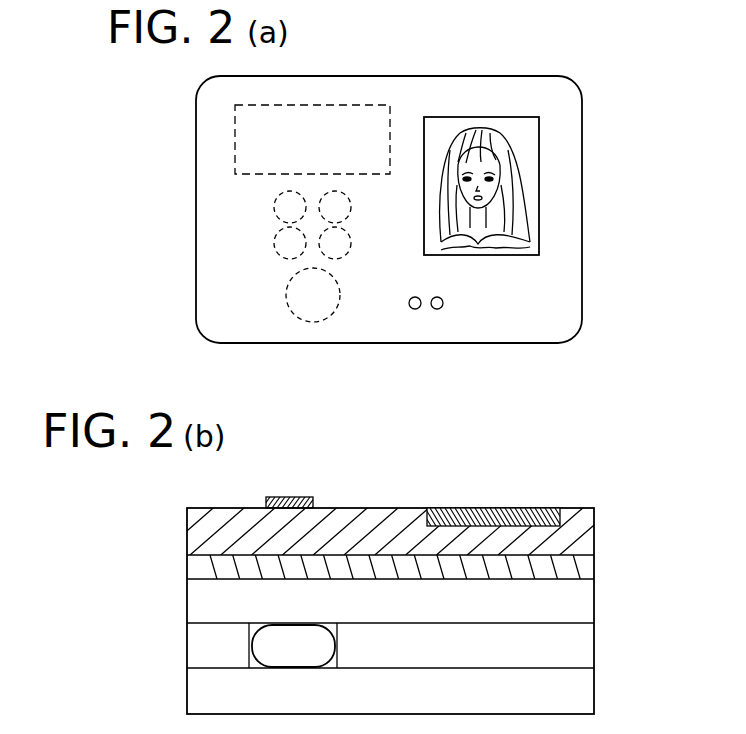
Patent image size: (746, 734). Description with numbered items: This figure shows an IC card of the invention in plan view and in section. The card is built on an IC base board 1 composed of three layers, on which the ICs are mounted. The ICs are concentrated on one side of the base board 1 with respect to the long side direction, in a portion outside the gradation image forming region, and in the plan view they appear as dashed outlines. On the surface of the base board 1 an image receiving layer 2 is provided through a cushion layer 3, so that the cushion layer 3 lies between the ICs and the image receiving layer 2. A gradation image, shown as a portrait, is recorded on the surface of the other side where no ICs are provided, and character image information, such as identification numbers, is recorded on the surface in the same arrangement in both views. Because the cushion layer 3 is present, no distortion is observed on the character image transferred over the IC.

The IC base board 1 is at (585, 603).
The image receiving layer 2 is at (585, 540).
The cushion layer 3 is at (585, 568).